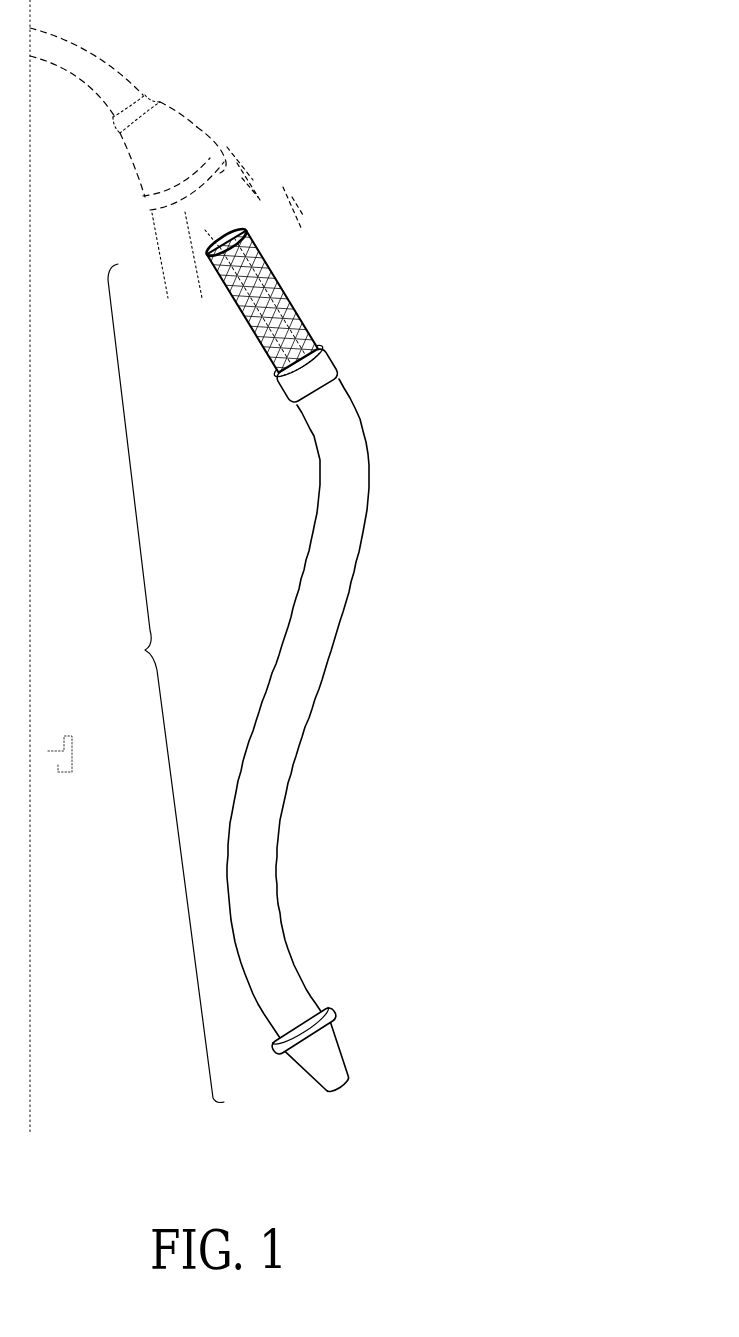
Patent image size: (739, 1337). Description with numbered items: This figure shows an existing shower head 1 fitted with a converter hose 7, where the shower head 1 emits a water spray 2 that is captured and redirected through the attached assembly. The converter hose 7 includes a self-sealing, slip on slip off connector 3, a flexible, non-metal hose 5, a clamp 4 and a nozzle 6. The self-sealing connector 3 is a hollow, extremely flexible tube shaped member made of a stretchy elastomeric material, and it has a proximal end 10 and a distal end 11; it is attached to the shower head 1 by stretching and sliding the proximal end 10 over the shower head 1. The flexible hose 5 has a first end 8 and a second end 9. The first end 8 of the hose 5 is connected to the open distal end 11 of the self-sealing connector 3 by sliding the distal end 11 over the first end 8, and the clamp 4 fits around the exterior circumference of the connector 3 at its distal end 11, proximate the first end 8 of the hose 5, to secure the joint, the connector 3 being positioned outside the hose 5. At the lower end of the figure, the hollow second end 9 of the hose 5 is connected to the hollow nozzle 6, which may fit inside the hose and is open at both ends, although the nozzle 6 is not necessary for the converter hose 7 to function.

The shower head 1 is at (195, 125).
The water spray 2 is at (268, 183).
The self-sealing connector 3 is at (290, 298).
The clamp 4 is at (337, 360).
The flexible hose 5 is at (311, 716).
The nozzle 6 is at (343, 1045).
The converter hose 7 is at (166, 683).
The first end 8 is at (327, 404).
The second end 9 is at (304, 1033).
The proximal end 10 is at (208, 243).
The distal end 11 is at (275, 372).